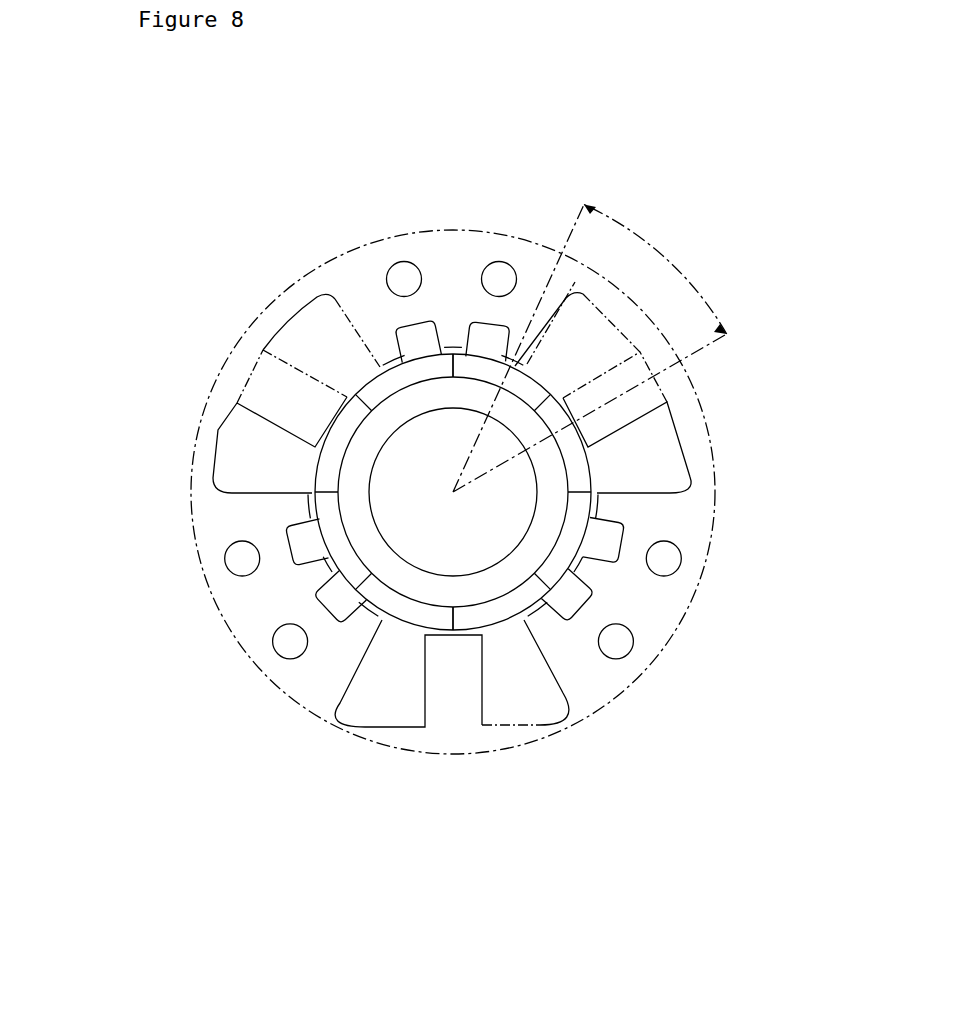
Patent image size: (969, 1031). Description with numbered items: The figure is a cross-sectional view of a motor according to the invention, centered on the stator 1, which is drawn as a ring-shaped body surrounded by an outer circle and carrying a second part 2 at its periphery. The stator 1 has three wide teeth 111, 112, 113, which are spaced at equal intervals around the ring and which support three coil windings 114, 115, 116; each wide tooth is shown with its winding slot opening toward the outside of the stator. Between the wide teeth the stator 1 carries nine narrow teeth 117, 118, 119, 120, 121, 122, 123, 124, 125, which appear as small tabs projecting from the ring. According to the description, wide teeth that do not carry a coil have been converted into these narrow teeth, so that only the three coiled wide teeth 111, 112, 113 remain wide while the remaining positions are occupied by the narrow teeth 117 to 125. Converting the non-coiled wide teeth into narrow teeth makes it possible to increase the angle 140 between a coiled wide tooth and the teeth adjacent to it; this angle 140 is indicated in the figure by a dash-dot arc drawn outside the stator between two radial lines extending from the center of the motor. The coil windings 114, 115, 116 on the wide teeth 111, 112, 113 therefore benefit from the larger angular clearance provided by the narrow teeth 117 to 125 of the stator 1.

The stator 1 is at (205, 565).
The ring core 2 is at (557, 518).
The wide tooth 111 is at (597, 425).
The wide tooth 112 is at (453, 653).
The wide tooth 113 is at (315, 413).
The coil winding 114 is at (645, 447).
The coil winding 115 is at (397, 680).
The coil winding 116 is at (307, 348).
The narrow tooth 117 is at (607, 503).
The narrow tooth 118 is at (580, 567).
The narrow tooth 119 is at (542, 622).
The narrow tooth 120 is at (365, 623).
The narrow tooth 121 is at (318, 567).
The narrow tooth 122 is at (300, 511).
The narrow tooth 123 is at (387, 357).
The narrow tooth 124 is at (452, 345).
The narrow tooth 125 is at (507, 357).
The angle 140 is at (658, 252).